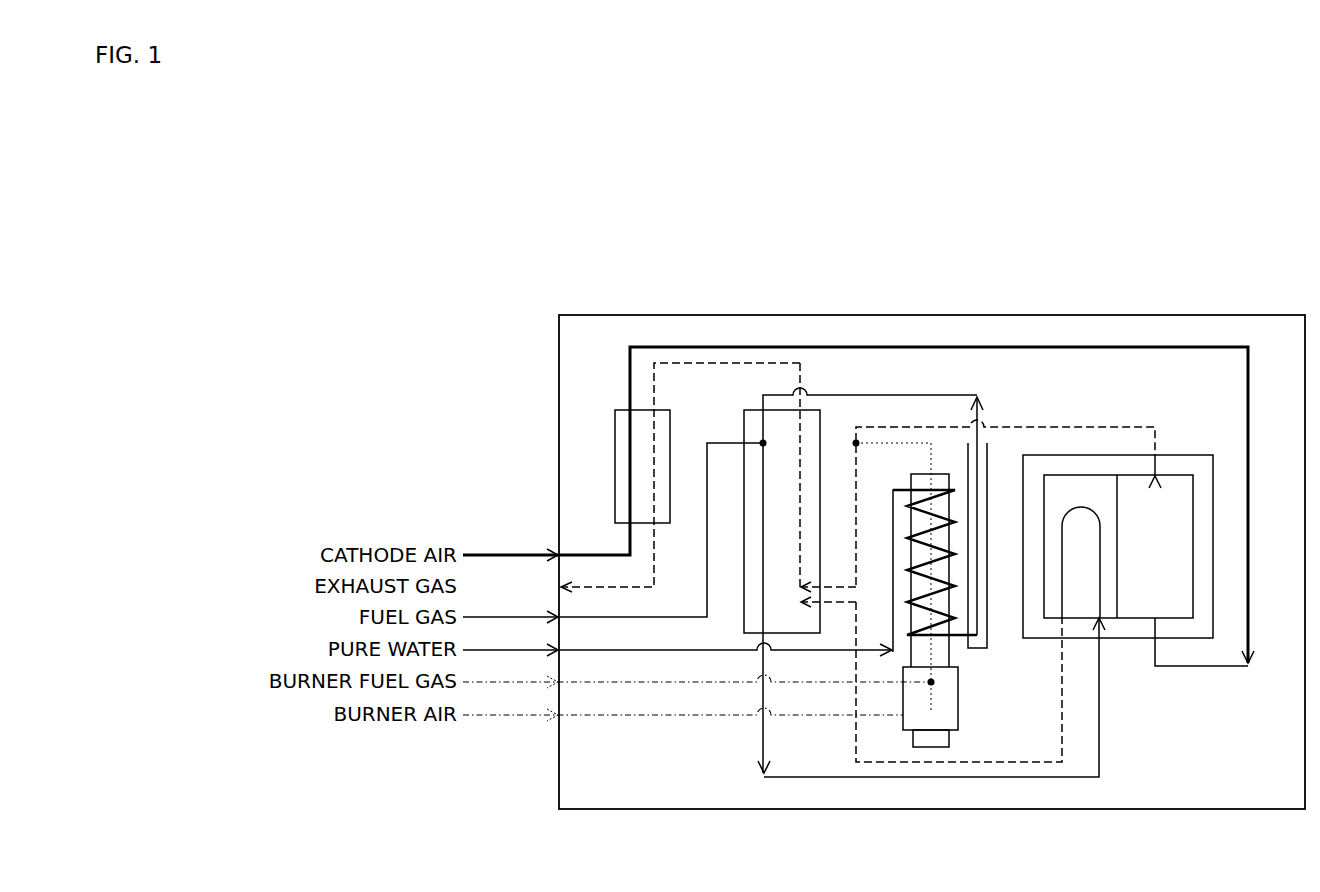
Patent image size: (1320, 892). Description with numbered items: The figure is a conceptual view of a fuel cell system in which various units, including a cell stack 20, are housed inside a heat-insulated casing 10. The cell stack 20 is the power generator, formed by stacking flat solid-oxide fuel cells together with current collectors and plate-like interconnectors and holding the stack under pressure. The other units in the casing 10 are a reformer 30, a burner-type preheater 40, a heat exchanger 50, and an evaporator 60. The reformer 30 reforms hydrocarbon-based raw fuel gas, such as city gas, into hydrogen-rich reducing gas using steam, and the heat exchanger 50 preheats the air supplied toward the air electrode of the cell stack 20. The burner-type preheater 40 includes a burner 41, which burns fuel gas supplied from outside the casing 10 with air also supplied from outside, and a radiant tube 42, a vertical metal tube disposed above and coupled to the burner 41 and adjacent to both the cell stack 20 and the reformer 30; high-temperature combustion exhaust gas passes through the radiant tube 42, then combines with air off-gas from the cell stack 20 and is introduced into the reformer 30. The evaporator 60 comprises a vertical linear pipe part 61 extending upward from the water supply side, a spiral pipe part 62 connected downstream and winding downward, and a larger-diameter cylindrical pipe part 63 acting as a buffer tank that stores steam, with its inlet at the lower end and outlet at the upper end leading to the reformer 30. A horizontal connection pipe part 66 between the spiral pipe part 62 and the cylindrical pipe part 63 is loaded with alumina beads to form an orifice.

The heat-insulated casing 10 is at (558, 418).
The cell stack 20 is at (1183, 452).
The reformer 30 is at (744, 424).
The burner-type preheater 40 is at (958, 597).
The burner 41 is at (958, 705).
The radiant tube 42 is at (925, 472).
The heat exchanger 50 is at (615, 468).
The evaporator 60 is at (899, 566).
The linear pipe part 61 is at (893, 552).
The spiral pipe part 62 is at (922, 574).
The cylindrical pipe part 63 is at (989, 446).
The horizontal connection pipe part 66 is at (962, 623).